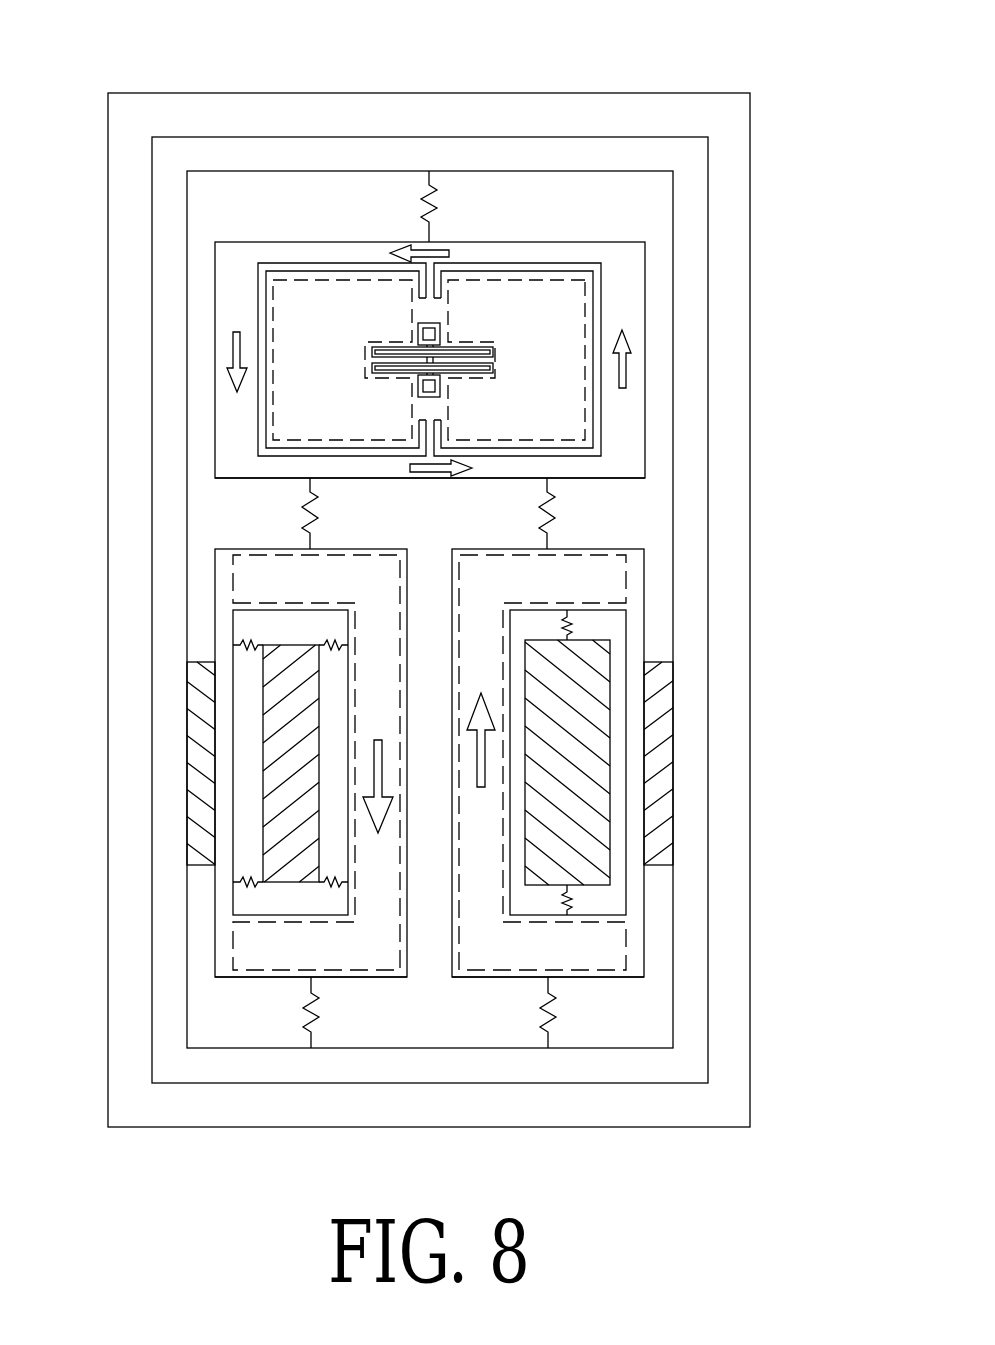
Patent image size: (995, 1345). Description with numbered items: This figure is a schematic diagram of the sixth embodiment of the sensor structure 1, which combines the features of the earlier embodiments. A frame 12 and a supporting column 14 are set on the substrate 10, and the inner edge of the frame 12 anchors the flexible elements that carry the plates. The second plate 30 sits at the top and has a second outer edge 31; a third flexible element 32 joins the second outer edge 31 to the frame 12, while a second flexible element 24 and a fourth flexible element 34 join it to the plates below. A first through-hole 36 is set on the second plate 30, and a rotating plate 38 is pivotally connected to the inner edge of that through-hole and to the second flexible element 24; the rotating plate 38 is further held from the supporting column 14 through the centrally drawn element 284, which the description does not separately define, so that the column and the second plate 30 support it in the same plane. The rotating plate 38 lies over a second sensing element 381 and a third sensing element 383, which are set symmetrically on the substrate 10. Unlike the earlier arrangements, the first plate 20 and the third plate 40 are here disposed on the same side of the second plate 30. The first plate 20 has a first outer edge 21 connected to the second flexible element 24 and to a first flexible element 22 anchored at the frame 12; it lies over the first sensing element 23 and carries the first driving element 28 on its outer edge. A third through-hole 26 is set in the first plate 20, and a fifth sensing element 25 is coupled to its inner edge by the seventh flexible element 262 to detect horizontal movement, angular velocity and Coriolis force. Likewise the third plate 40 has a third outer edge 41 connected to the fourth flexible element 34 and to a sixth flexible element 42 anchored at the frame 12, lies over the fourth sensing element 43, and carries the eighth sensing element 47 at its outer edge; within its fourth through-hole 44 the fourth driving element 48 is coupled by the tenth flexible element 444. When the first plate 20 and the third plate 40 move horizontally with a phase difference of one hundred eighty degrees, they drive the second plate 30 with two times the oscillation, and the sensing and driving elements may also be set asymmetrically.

The micro-electromechanical gyroscope 1 is at (820, 57).
The substrate 10 is at (189, 93).
The frame 12 is at (268, 137).
The supporting column 14 is at (438, 335).
The first plate 20 is at (215, 927).
The first outer edge 21 is at (232, 549).
The first flexible element 22 is at (318, 1027).
The first sensing element 23 is at (255, 972).
The second flexible element 24 is at (312, 535).
The fifth sensing element 25 is at (270, 880).
The third through-hole 26 is at (345, 663).
The seventh flexible element 262 is at (336, 887).
The first driving element 28 is at (202, 662).
The second plate 30 is at (235, 242).
The second outer edge 31 is at (433, 480).
The third flexible element 32 is at (437, 222).
The fourth flexible element 34 is at (547, 535).
The first through-hole 36 is at (305, 268).
The rotating plate 38 is at (368, 279).
The second sensing element 381 is at (303, 441).
The third sensing element 383 is at (557, 440).
The coupling beams 284 is at (412, 355).
The third plate 40 is at (645, 928).
The third outer edge 41 is at (628, 549).
The sixth flexible element 42 is at (537, 1032).
The fourth sensing element 43 is at (603, 972).
The fourth through-hole 44 is at (512, 662).
The tenth flexible element 444 is at (563, 902).
The eighth sensing element 47 is at (658, 662).
The fourth driving element 48 is at (592, 887).